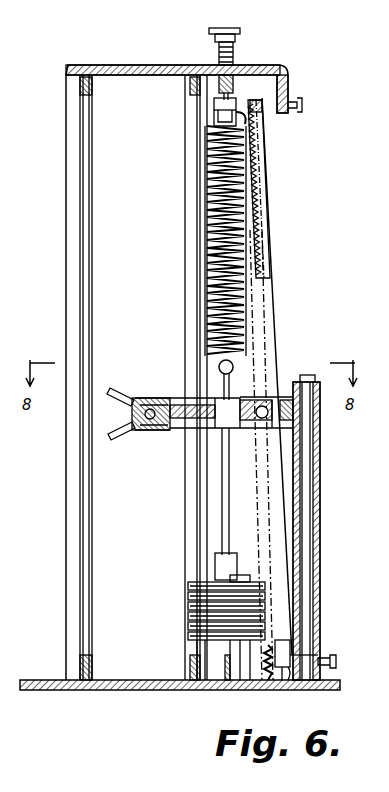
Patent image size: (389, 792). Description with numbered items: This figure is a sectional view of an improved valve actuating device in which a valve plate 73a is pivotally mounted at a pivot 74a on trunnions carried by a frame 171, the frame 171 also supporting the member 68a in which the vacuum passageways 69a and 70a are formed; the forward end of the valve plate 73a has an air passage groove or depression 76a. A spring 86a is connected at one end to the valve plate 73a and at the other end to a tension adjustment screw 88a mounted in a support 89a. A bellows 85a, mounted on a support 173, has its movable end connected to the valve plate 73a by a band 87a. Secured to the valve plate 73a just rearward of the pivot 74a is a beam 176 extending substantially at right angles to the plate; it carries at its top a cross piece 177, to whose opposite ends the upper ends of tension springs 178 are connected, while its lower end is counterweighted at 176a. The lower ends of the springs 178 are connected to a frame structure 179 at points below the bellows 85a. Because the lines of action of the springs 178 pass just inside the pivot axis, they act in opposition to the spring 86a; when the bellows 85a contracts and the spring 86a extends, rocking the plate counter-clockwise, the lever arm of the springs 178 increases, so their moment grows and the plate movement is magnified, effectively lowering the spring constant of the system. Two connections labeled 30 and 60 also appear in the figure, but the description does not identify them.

The support 89a is at (158, 46).
The tension adjustment screw 88a is at (235, 58).
The cross piece 177 is at (262, 120).
The spring 86a is at (205, 227).
The tension springs 178 is at (260, 242).
The beam 176 is at (278, 301).
The air passage groove 76a is at (163, 396).
The vacuum passageway 69a is at (152, 398).
The tube 30 is at (120, 404).
The tube 60 is at (124, 434).
The valve plate 73a is at (150, 432).
The member 68a is at (146, 432).
The vacuum passageway 70a is at (143, 432).
The band 87a is at (222, 523).
The pivot 74a is at (284, 398).
The frame 171 is at (321, 442).
The bellows 85a is at (188, 606).
The support 173 is at (215, 656).
The frame structure 179 is at (150, 690).
The counterweight 176a is at (288, 686).